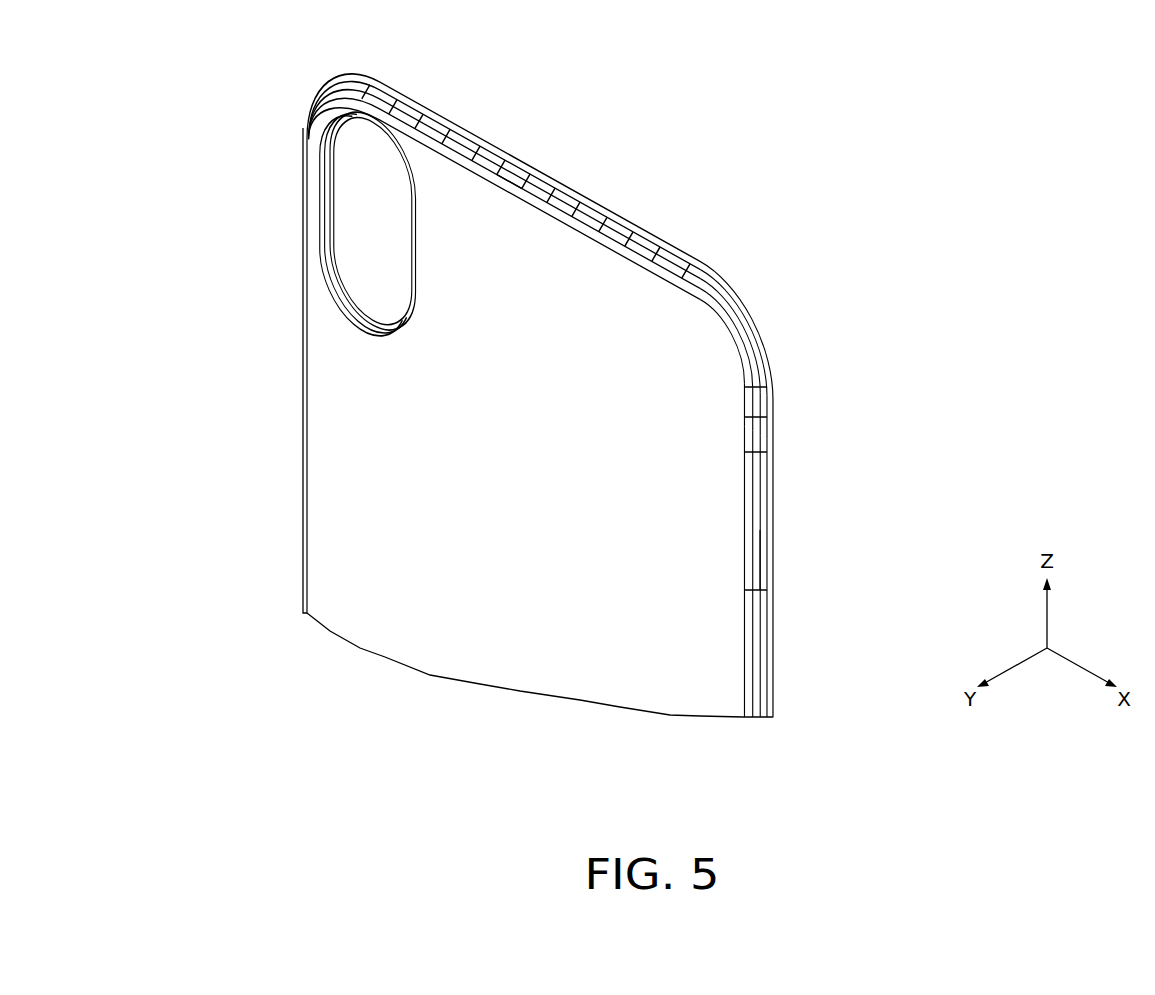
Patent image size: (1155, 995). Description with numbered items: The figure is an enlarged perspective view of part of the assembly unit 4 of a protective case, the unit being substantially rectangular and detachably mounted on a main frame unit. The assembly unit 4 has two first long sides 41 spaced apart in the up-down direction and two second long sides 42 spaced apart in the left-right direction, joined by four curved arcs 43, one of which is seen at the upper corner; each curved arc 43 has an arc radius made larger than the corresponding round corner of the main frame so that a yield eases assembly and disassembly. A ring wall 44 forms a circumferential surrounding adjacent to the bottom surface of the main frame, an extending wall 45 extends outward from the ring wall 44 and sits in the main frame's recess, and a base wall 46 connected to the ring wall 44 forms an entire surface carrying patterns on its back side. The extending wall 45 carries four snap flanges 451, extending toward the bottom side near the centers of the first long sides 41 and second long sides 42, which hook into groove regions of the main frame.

The assembly unit 4 is at (297, 428).
The first long side 41 is at (424, 106).
The second long side 42 is at (777, 487).
The curved arc 43 is at (336, 74).
The ring wall 44 is at (752, 367).
The extending wall 45 is at (734, 291).
The snap flange 451 is at (517, 158).
The base wall 46 is at (333, 519).